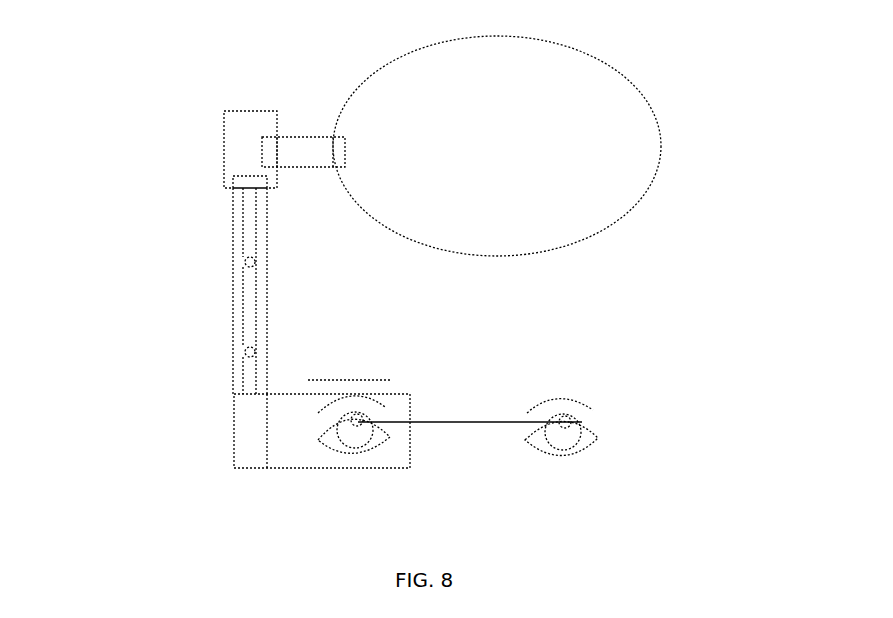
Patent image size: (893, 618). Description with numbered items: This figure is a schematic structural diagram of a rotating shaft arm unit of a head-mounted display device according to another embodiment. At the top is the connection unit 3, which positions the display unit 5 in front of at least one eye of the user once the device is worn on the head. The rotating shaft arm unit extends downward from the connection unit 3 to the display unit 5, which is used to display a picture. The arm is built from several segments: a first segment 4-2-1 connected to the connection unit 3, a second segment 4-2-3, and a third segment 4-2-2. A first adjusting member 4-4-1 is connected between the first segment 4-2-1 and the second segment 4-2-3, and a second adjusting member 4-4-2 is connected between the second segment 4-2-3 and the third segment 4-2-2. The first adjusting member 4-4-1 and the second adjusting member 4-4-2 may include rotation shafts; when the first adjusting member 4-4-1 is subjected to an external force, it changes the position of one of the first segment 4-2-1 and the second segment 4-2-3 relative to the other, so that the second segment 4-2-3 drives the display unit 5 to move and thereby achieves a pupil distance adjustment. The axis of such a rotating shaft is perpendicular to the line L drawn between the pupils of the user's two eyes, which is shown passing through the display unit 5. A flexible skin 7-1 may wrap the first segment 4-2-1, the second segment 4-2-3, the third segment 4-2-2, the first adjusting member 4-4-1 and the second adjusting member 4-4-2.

The connection unit 3 is at (543, 214).
The first segment 4-2-1 is at (243, 200).
The flexible skin 7-1 is at (233, 250).
The first adjusting member 4-4-1 is at (245, 265).
The second segment 4-2-3 is at (243, 303).
The second adjusting member 4-4-2 is at (245, 362).
The third segment 4-2-2 is at (243, 388).
The display unit 5 is at (410, 437).
The line between pupils of two eyes L is at (462, 422).